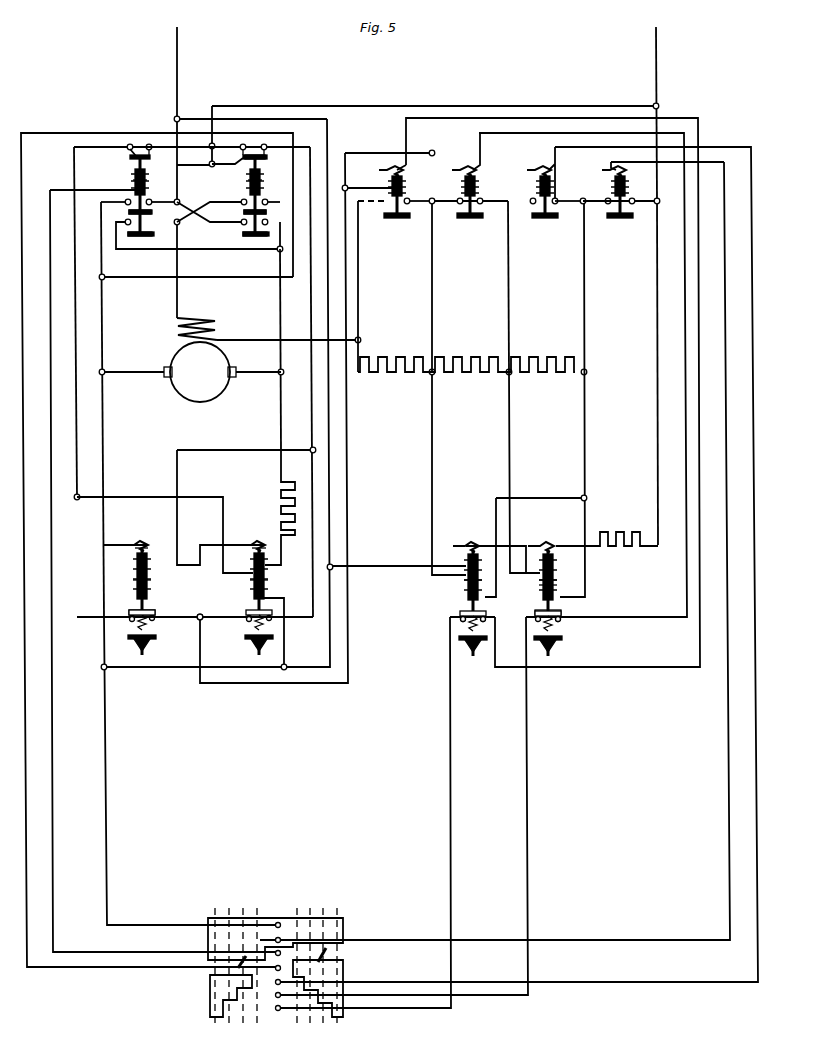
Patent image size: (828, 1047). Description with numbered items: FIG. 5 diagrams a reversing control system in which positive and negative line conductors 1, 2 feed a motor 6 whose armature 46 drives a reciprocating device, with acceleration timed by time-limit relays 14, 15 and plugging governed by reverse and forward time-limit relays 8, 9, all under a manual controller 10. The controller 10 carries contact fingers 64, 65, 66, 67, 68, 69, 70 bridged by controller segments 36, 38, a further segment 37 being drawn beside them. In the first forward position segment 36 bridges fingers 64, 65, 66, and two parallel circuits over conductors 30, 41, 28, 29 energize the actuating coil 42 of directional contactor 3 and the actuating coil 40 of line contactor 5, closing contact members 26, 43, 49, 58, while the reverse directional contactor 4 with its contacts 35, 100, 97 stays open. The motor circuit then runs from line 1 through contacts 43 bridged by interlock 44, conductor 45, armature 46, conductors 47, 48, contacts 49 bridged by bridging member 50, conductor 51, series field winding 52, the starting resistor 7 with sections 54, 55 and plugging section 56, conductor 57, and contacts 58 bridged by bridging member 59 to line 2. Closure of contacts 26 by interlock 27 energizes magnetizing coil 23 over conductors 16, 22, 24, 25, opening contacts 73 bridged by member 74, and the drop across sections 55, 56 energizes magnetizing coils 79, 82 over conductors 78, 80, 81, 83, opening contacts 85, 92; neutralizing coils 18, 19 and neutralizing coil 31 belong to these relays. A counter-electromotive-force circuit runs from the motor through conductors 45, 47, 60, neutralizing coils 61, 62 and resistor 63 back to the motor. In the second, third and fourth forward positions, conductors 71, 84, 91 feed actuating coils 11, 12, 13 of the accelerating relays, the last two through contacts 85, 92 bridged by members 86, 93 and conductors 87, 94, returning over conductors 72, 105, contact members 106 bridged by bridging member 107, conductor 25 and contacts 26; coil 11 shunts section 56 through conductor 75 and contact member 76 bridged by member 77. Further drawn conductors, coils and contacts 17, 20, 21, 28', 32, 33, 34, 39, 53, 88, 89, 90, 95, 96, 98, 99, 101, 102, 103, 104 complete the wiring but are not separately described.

The positive line conductor 1 is at (176, 92).
The negative line conductor 2 is at (657, 93).
The directional contactor 3 is at (130, 195).
The directional contactor 4 is at (247, 195).
The line contactor 5 is at (613, 192).
The motor 6 is at (190, 357).
The starting resistor 7 is at (508, 346).
The reverse time-limit relay 8 is at (139, 584).
The forward time-limit relay 9 is at (256, 585).
The manual controller 10 is at (276, 945).
The actuating coil 11 is at (538, 181).
The actuating coil 12 is at (463, 181).
The actuating coil 13 is at (390, 181).
The time-limit relay 14 is at (470, 592).
The time-limit relay 15 is at (545, 592).
The conductor 16 is at (330, 140).
The conductor 17 is at (394, 568).
The neutralizing coil 18 is at (466, 549).
The neutralizing coil 19 is at (555, 558).
The coil 20 is at (628, 546).
The conductor 21 is at (657, 400).
The conductor 22 is at (286, 656).
The magnetizing coil 23 is at (285, 598).
The conductor 24 is at (203, 497).
The conductor 25 is at (78, 390).
The contact members 26 is at (126, 149).
The interlock 27 is at (148, 145).
The conductor 28 is at (192, 154).
The conductor 28' is at (196, 173).
The conductor 29 is at (296, 106).
The conductor 30 is at (106, 660).
The neutralizing coil 31 is at (133, 590).
The conductor 32 is at (179, 530).
The conductor 33 is at (311, 402).
The contact 34 is at (267, 158).
The contacts 35 is at (239, 156).
The controller segment 36 is at (345, 923).
The controller segment 37 is at (345, 967).
The controller segment 38 is at (208, 1005).
The conductor 39 is at (665, 940).
The actuating coil 40 is at (627, 172).
The conductor 41 is at (54, 921).
The actuating coil 42 is at (148, 181).
The contacts 43 is at (151, 200).
The interlock 44 is at (153, 212).
The conductor 45 is at (104, 292).
The armature 46 is at (200, 372).
The conductor 47 is at (279, 327).
The conductor 48 is at (196, 269).
The contacts 49 is at (126, 205).
The bridging member 50 is at (150, 233).
The conductor 51 is at (178, 292).
The series field winding 52 is at (218, 323).
The conductor 53 is at (300, 338).
The resistor section 54 is at (402, 375).
The resistor section 55 is at (477, 375).
The plugging resistor section 56 is at (549, 375).
The conductor 57 is at (587, 325).
The contacts 58 is at (598, 216).
The bridging member 59 is at (621, 219).
The conductor 60 is at (104, 460).
The neutralizing coil 61 is at (135, 552).
The neutralizing coil 62 is at (253, 552).
The resistor 63 is at (291, 536).
The contact finger 64 is at (287, 924).
The contact finger 65 is at (270, 939).
The contact finger 66 is at (287, 953).
The contact finger 67 is at (269, 971).
The contact finger 68 is at (269, 984).
The contact finger 69 is at (269, 997).
The contact finger 70 is at (269, 1010).
The conductor 71 is at (722, 146).
The conductor 72 is at (349, 480).
The contacts 73 is at (247, 621).
The bridging member 74 is at (243, 590).
The conductor 75 is at (511, 240).
The contact member 76 is at (556, 192).
The bridging member 77 is at (553, 220).
The conductor 78 is at (508, 476).
The magnetizing coil 79 is at (540, 590).
The conductor 80 is at (587, 495).
The conductor 81 is at (434, 490).
The magnetizing coil 82 is at (466, 590).
The conductor 83 is at (526, 498).
The conductor 84 is at (530, 922).
The contacts 85 is at (562, 622).
The bridging member 86 is at (565, 610).
The conductor 87 is at (646, 618).
The conductor 88 is at (436, 238).
The contact 89 is at (480, 199).
The contact 90 is at (480, 216).
The conductor 91 is at (452, 920).
The contact members 92 is at (488, 622).
The bridging member 93 is at (460, 613).
The conductor 94 is at (404, 140).
The conductor 95 is at (82, 133).
The coil 96 is at (263, 181).
The contacts 97 is at (240, 217).
The contact 98 is at (243, 236).
The conductor 99 is at (215, 278).
The contacts 100 is at (275, 201).
The contact 101 is at (268, 214).
The conductor 102 is at (359, 285).
The contact 103 is at (409, 201).
The conductor 104 is at (397, 210).
The conductor 105 is at (175, 619).
The contact members 106 is at (130, 621).
The bridging member 107 is at (153, 610).